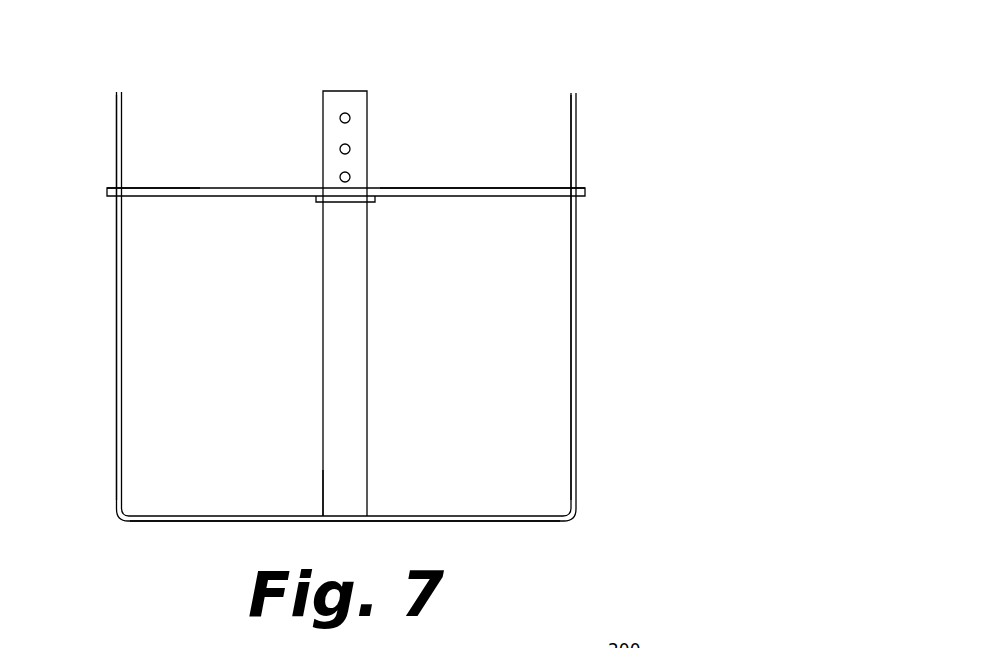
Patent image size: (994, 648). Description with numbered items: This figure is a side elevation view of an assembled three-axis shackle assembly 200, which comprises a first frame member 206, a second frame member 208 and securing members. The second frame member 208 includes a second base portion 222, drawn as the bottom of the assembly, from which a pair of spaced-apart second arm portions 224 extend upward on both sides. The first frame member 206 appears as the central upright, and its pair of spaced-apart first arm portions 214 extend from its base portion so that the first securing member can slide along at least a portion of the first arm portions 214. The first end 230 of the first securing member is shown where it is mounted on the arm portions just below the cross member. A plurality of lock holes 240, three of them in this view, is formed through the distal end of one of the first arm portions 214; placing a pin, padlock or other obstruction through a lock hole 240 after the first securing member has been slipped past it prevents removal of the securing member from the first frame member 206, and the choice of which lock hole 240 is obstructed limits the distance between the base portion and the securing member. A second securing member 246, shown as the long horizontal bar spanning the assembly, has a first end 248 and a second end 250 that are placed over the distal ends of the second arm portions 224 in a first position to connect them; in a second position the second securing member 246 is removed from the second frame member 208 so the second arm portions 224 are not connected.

The three-axis shackle assembly 200 is at (637, 118).
The first frame member 206 is at (372, 437).
The second frame member 208 is at (578, 460).
The first arm portions 214 is at (342, 487).
The second base portion 222 is at (200, 521).
The second arm portions 224 is at (116, 390).
The first end 230 is at (348, 206).
The lock hole 240 is at (351, 177).
The second securing member 246 is at (215, 188).
The first end 248 is at (510, 197).
The second end 250 is at (138, 197).